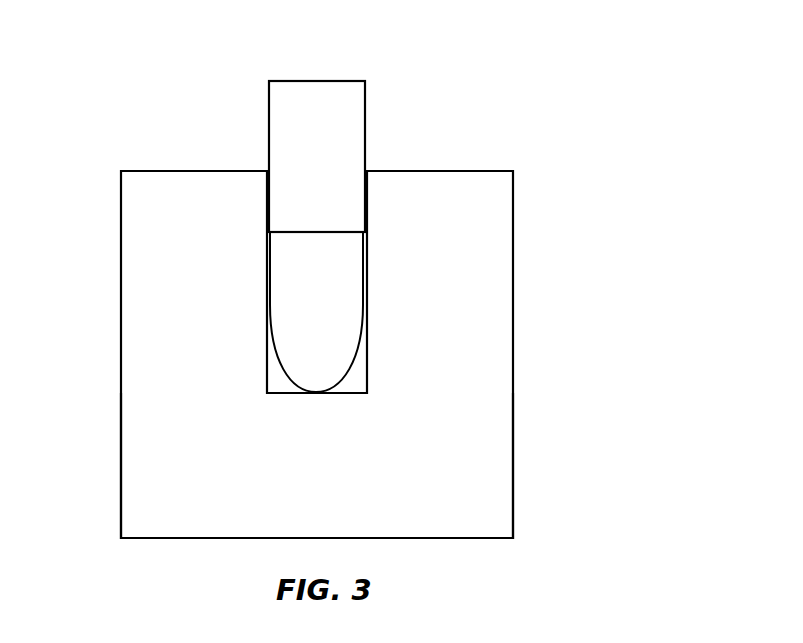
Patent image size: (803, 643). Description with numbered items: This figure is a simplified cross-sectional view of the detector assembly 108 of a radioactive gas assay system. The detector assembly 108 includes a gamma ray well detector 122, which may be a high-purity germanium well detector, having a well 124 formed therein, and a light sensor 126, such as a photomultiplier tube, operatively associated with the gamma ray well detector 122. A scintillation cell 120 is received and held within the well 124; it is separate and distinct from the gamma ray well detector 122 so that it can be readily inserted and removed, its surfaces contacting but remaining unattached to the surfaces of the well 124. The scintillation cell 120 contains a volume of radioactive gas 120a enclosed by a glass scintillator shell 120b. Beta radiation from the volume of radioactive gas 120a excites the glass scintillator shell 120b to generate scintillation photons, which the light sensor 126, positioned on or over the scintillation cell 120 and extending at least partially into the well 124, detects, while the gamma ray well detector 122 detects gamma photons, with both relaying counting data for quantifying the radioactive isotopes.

The detector assembly 108 is at (115, 114).
The scintillation cell 120 is at (613, 302).
The volume of radioactive gas 120a is at (323, 296).
The glass scintillator shell 120b is at (317, 231).
The gamma ray well detector 122 is at (317, 465).
The well 124 is at (358, 380).
The light sensor 126 is at (317, 156).